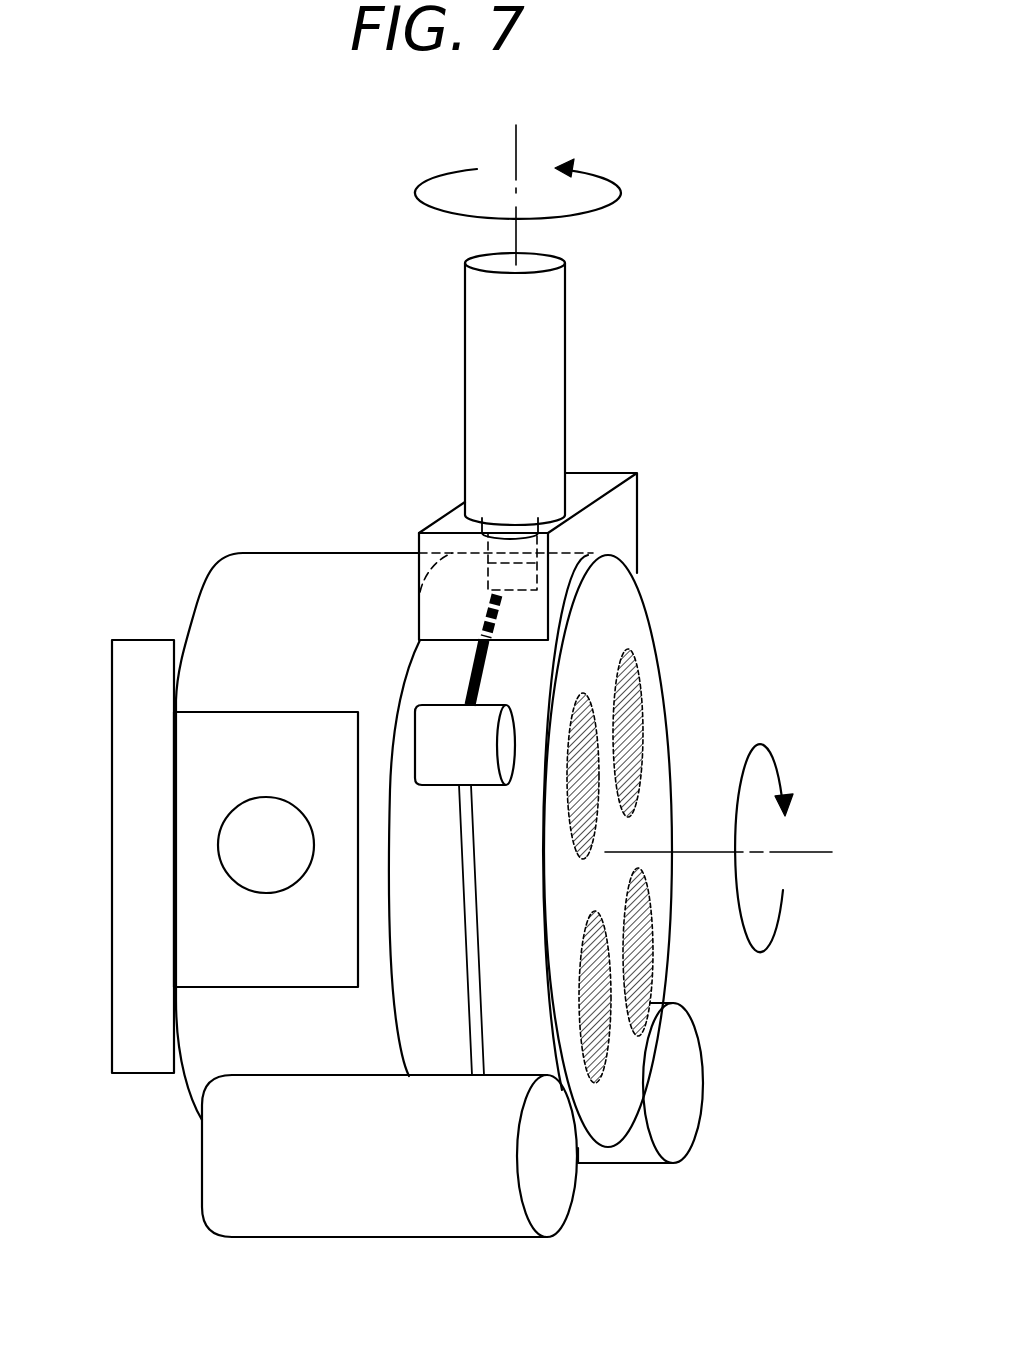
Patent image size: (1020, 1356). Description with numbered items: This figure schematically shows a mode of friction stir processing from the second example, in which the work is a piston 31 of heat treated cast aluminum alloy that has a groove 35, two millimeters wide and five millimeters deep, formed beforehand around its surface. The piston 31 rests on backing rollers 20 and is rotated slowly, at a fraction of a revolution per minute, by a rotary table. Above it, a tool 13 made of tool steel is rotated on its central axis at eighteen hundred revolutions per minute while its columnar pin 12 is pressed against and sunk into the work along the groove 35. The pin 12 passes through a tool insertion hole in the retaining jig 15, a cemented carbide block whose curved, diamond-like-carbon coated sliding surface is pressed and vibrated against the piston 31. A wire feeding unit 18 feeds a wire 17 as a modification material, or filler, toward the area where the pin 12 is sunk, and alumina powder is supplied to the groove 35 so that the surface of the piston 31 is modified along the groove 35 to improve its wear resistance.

The pin 12 is at (537, 553).
The tool 13 is at (545, 368).
The retaining jig 15 is at (447, 523).
The wire 17 is at (485, 673).
The wire feeding unit 18 is at (440, 740).
The backing rollers 20 is at (377, 1172).
The piston 31 is at (417, 948).
The groove 35 is at (475, 1043).